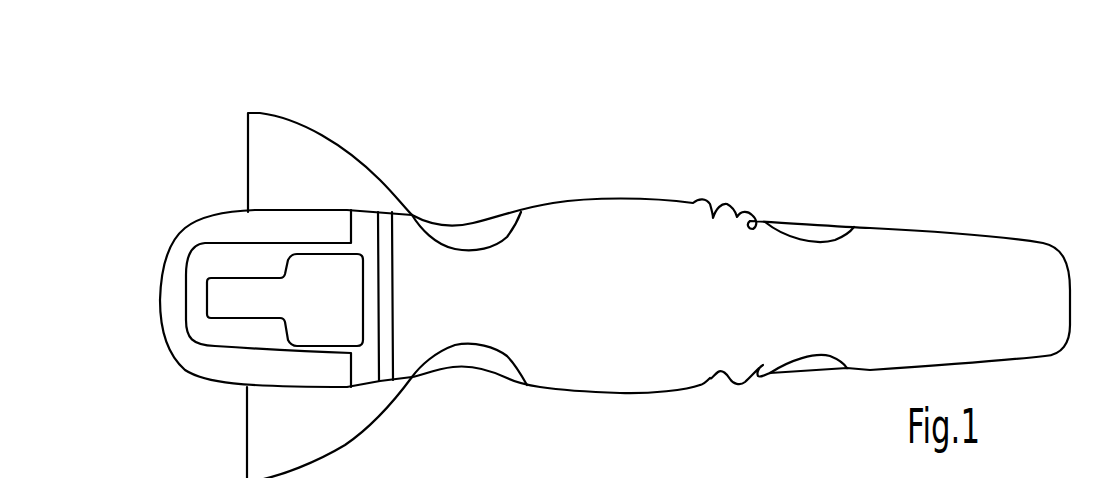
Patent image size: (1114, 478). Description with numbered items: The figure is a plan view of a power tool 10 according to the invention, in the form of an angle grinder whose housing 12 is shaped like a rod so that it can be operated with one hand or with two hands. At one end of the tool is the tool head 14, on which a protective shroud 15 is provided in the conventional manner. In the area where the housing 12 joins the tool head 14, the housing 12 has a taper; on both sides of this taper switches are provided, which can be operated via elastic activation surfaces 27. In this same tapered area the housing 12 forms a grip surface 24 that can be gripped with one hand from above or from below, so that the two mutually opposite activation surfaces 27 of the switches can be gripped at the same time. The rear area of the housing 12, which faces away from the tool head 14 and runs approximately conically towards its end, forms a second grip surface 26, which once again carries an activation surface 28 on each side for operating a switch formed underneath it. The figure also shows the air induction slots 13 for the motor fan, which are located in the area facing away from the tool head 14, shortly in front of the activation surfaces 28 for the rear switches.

The power tool 10 is at (582, 138).
The housing 12 is at (632, 220).
The air induction slots 13 is at (712, 390).
The tool head 14 is at (207, 357).
The protective shroud 15 is at (318, 170).
The grip surface 24 is at (460, 205).
The second grip surface 26 is at (915, 212).
The activation surfaces 27 is at (477, 353).
The activation surfaces 28 is at (820, 362).